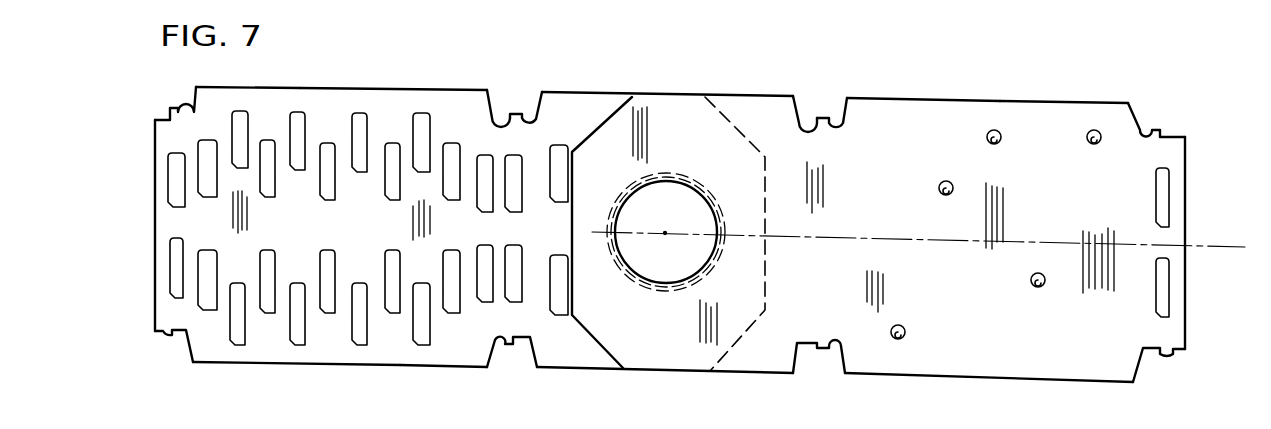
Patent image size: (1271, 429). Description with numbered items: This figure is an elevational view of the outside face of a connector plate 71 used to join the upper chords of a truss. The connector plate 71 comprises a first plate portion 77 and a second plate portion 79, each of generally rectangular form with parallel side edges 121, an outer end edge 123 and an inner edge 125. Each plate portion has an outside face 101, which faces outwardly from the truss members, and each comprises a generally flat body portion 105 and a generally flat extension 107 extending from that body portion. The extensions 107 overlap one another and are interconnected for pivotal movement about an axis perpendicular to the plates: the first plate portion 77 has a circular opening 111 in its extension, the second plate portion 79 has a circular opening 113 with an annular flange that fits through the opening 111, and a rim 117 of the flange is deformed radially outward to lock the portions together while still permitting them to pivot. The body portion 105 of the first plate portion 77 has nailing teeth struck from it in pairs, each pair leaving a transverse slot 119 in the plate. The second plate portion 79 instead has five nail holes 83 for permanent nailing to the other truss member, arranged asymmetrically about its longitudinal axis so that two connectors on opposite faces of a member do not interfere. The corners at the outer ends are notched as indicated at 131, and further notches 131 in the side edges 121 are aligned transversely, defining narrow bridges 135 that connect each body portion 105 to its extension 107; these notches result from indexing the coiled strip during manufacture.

The first connector plate 71 is at (347, 88).
The first plate portion 77 is at (452, 92).
The second plate portion 79 is at (921, 97).
The nail holes 83 is at (952, 185).
The outside face 101 is at (317, 241).
The body portion 105 is at (1053, 108).
The extension 107 is at (670, 343).
The circular opening 111 is at (677, 183).
The circular opening 113 is at (702, 196).
The rim 117 is at (627, 275).
The slot 119 is at (398, 182).
The side edges 121 is at (248, 86).
The outer end edge 123 is at (155, 212).
The inner edge 125 is at (613, 112).
The notches 131 is at (193, 105).
The narrow bridges 135 is at (497, 122).